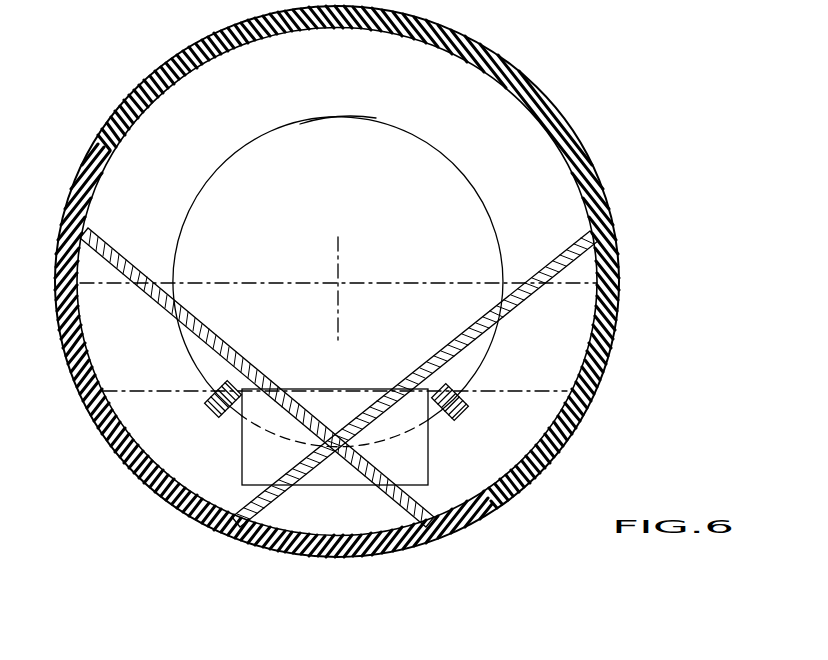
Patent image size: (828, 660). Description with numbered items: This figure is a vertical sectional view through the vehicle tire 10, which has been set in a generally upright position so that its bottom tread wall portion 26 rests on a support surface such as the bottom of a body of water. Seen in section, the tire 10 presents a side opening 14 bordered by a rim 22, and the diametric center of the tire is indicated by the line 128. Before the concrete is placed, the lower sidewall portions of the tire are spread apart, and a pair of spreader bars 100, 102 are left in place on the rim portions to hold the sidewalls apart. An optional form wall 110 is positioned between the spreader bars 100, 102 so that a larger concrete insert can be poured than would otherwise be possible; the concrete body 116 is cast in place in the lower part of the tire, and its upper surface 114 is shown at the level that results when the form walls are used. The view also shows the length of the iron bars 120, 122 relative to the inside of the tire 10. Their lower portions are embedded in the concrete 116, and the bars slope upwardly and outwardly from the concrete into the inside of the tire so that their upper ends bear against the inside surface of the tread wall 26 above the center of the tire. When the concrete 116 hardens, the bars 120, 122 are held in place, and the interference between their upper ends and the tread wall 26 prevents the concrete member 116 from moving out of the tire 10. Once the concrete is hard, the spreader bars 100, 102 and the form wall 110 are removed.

The vehicle tire 10 is at (101, 86).
The side opening 14 is at (293, 152).
The rim 22 is at (378, 126).
The bottom tread wall portion 26 is at (412, 554).
The spreader bar 100 is at (214, 416).
The spreader bar 102 is at (458, 428).
The form wall 110 is at (325, 402).
The upper surface of the concrete body 114 is at (545, 393).
The concrete body 116 is at (530, 432).
The iron bar 120 is at (194, 323).
The iron bar 122 is at (489, 315).
The diametric center line 128 is at (405, 283).